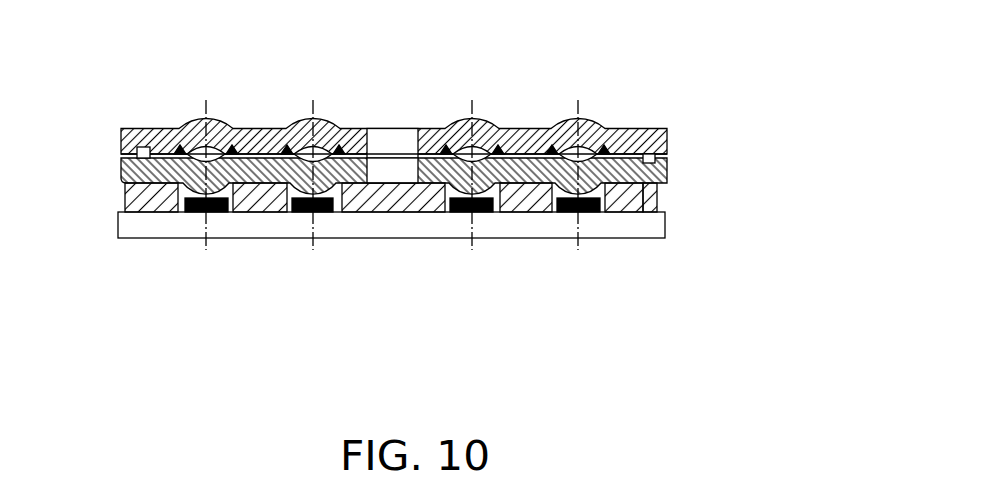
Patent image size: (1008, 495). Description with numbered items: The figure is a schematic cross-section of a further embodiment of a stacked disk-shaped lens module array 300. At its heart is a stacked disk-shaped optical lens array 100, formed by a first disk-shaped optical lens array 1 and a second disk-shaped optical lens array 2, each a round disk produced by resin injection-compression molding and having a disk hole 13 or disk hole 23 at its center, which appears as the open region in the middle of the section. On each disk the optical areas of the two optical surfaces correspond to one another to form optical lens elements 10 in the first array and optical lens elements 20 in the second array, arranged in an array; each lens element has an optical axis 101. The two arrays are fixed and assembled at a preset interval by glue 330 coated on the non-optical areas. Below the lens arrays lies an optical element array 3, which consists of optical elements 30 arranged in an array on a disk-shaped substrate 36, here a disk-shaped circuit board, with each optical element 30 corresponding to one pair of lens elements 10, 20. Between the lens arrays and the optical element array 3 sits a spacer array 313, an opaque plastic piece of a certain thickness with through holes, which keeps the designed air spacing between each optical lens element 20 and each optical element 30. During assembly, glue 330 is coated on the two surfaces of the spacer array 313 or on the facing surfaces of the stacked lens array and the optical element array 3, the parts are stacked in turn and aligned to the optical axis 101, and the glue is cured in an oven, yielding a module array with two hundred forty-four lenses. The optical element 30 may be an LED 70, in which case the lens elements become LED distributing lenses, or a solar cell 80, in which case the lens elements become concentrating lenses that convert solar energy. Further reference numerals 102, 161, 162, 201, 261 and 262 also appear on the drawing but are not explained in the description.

The disk-shaped optical lens array 1 is at (121, 136).
The disk-shaped optical lens array 2 is at (122, 165).
The optical element array 3 is at (347, 242).
The optical lens element 10 is at (354, 127).
The disk hole 13 is at (405, 128).
The optical lens element 20 is at (438, 196).
The disk hole 23 is at (383, 128).
The optical element 30 is at (403, 259).
The disk-shaped substrate 36 is at (386, 238).
The LED 70 is at (259, 205).
The solar cell 80 is at (560, 205).
The stacked disk-shaped optical lens array 100 is at (674, 156).
The optical axis 101 is at (206, 118).
The spacer 102 is at (275, 128).
The positioning hole 161 is at (651, 153).
The positioning hole 162 is at (146, 147).
The optical axis 201 is at (391, 192).
The positioning pin 261 is at (146, 162).
The positioning pin 262 is at (653, 178).
The stacked disk-shaped lens module array 300 is at (753, 68).
The spacer array 313 is at (652, 197).
The glue 330 is at (122, 153).